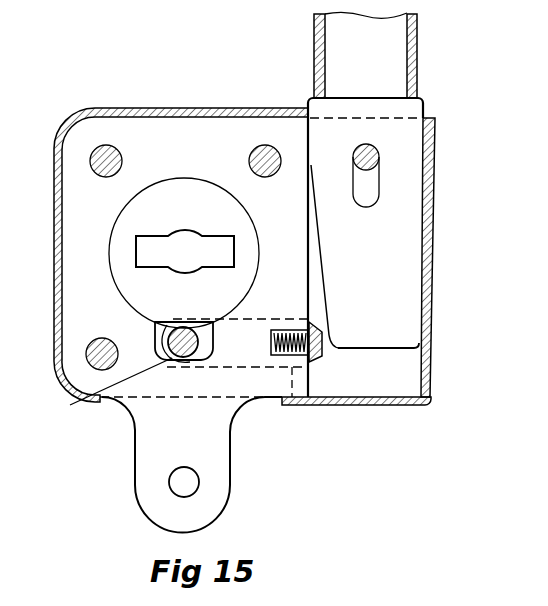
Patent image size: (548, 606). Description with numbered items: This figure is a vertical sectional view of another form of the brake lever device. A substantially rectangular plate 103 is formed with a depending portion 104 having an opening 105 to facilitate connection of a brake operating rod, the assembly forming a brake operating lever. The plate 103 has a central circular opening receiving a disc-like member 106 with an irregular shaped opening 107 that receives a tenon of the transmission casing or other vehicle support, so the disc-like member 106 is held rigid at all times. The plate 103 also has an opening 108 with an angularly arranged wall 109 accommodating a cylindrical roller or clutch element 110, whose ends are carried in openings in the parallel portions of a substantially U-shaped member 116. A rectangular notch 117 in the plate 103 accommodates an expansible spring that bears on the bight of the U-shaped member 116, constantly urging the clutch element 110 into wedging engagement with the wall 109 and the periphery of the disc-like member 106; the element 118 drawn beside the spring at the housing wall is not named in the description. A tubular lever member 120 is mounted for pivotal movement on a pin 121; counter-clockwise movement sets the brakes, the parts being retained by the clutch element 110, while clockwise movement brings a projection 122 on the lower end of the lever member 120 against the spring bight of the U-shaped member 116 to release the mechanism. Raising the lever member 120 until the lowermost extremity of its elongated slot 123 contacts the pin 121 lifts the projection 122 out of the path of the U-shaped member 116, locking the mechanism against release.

The plate 103 is at (73, 302).
The depending portion 104 is at (223, 481).
The opening 105 is at (174, 490).
The disc-like member 106 is at (183, 178).
The irregular shaped opening 107 is at (135, 254).
The opening 108 is at (155, 334).
The angularly arranged wall 109 is at (207, 357).
The clutch element 110 is at (109, 393).
The U-shaped member 116 is at (294, 406).
The rectangular notch 117 is at (286, 330).
The wedge plunger 118 is at (324, 359).
The lever member 120 is at (401, 126).
The pin 121 is at (378, 157).
The projection 122 is at (331, 337).
The elongated slot 123 is at (375, 197).